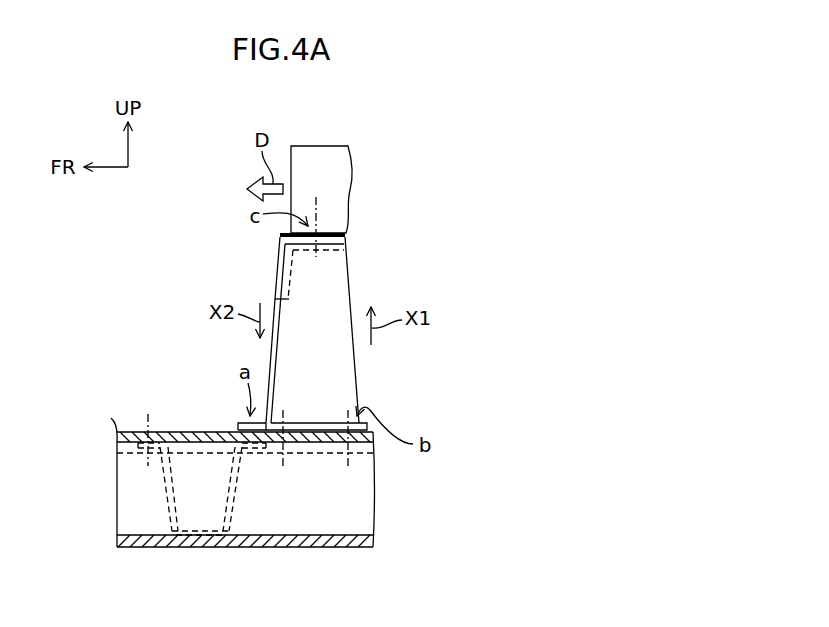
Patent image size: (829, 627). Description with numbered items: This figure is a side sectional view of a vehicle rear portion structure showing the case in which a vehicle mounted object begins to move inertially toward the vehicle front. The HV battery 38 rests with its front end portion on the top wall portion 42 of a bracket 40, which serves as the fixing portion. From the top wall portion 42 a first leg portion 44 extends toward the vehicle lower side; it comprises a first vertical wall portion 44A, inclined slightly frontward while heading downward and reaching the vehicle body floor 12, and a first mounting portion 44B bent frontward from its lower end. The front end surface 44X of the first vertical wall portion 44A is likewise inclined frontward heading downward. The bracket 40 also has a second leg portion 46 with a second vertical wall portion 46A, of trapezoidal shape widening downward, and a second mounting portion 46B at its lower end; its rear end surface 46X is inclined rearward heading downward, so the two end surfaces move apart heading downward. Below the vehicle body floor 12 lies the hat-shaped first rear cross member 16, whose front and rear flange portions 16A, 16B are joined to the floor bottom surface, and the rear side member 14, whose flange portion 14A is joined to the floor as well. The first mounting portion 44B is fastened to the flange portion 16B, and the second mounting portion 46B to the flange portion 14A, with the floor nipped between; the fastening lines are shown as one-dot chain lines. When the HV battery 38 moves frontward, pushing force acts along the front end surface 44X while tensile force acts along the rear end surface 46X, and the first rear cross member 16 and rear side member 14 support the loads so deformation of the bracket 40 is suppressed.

The vehicle body floor 12 is at (183, 428).
The rear side member 14 is at (338, 549).
The flange portion 14A is at (333, 455).
The first rear cross member 16 is at (140, 545).
The front flange portion 16A is at (138, 522).
The rear flange portion 16B is at (265, 448).
The HV battery 38 is at (331, 146).
The bracket 40 is at (377, 273).
The top wall portion 42 is at (331, 229).
The first leg portion 44 is at (243, 292).
The first vertical wall portion 44A is at (284, 361).
The front end surface 44X is at (268, 362).
The first mounting portion 44B is at (246, 419).
The second leg portion 46 is at (339, 363).
The rear end surface 46X is at (353, 352).
The second vertical wall portion 46A is at (344, 386).
The second mounting portion 46B is at (335, 423).